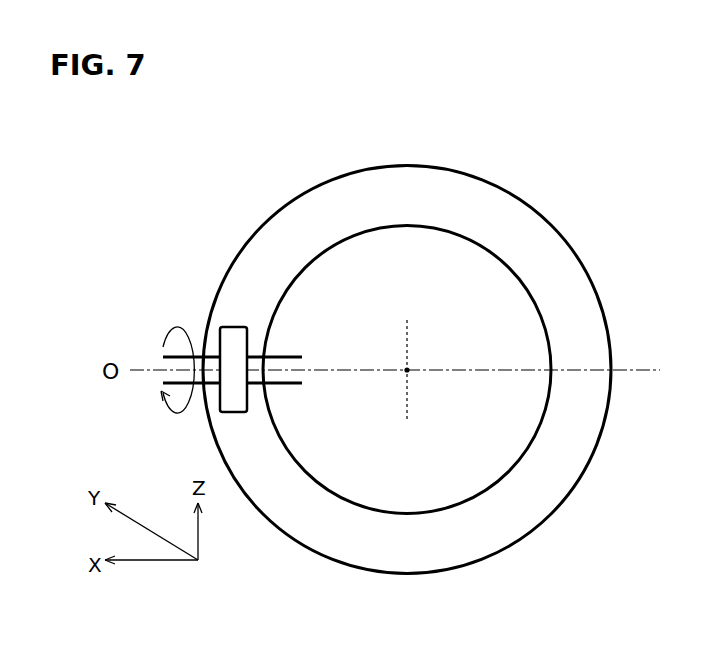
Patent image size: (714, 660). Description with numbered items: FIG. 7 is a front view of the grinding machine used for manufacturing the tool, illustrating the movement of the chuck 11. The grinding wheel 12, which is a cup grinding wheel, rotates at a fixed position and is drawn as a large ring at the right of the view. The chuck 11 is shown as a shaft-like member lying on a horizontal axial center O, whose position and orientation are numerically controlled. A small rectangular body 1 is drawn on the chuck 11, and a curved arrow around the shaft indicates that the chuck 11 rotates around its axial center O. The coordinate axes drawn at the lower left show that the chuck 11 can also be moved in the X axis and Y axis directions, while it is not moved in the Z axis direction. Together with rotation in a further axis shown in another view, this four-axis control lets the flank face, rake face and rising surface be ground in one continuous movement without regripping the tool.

The gyro sensor / rotating body 1 is at (228, 327).
The chuck 11 is at (279, 355).
The grinding wheel 12 is at (285, 225).